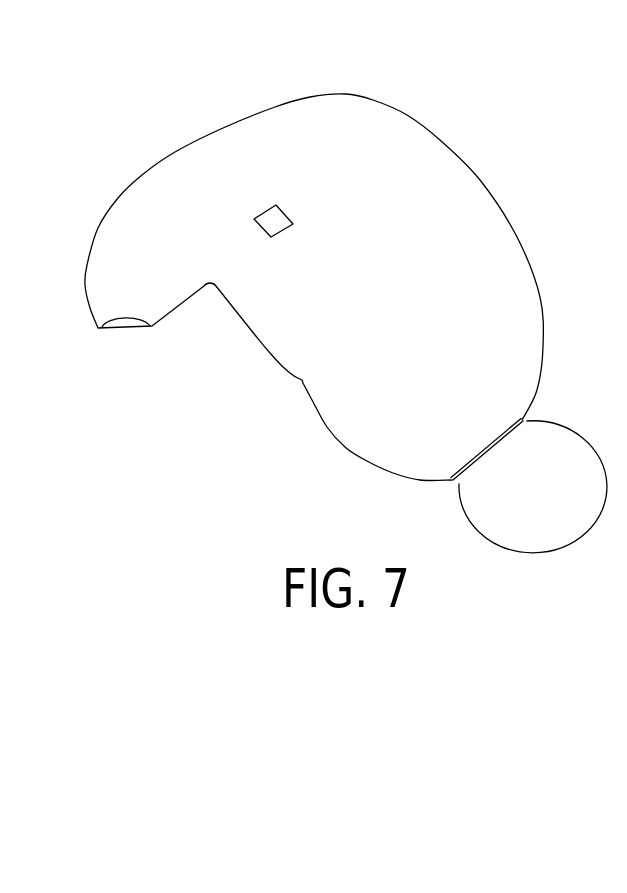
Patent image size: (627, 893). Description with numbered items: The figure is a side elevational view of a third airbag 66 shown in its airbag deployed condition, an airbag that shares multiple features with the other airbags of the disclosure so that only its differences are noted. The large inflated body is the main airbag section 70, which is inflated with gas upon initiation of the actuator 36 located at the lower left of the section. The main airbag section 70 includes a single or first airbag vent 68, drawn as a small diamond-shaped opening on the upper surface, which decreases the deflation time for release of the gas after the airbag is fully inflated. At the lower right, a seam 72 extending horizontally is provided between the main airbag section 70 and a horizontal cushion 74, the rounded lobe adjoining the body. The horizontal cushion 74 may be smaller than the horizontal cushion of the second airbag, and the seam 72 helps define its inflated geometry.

The third airbag 66 is at (496, 115).
The main airbag section 70 is at (493, 260).
The actuator 36 is at (126, 322).
The first airbag vent 68 is at (270, 217).
The seam 72 is at (525, 420).
The horizontal cushion 74 is at (514, 510).